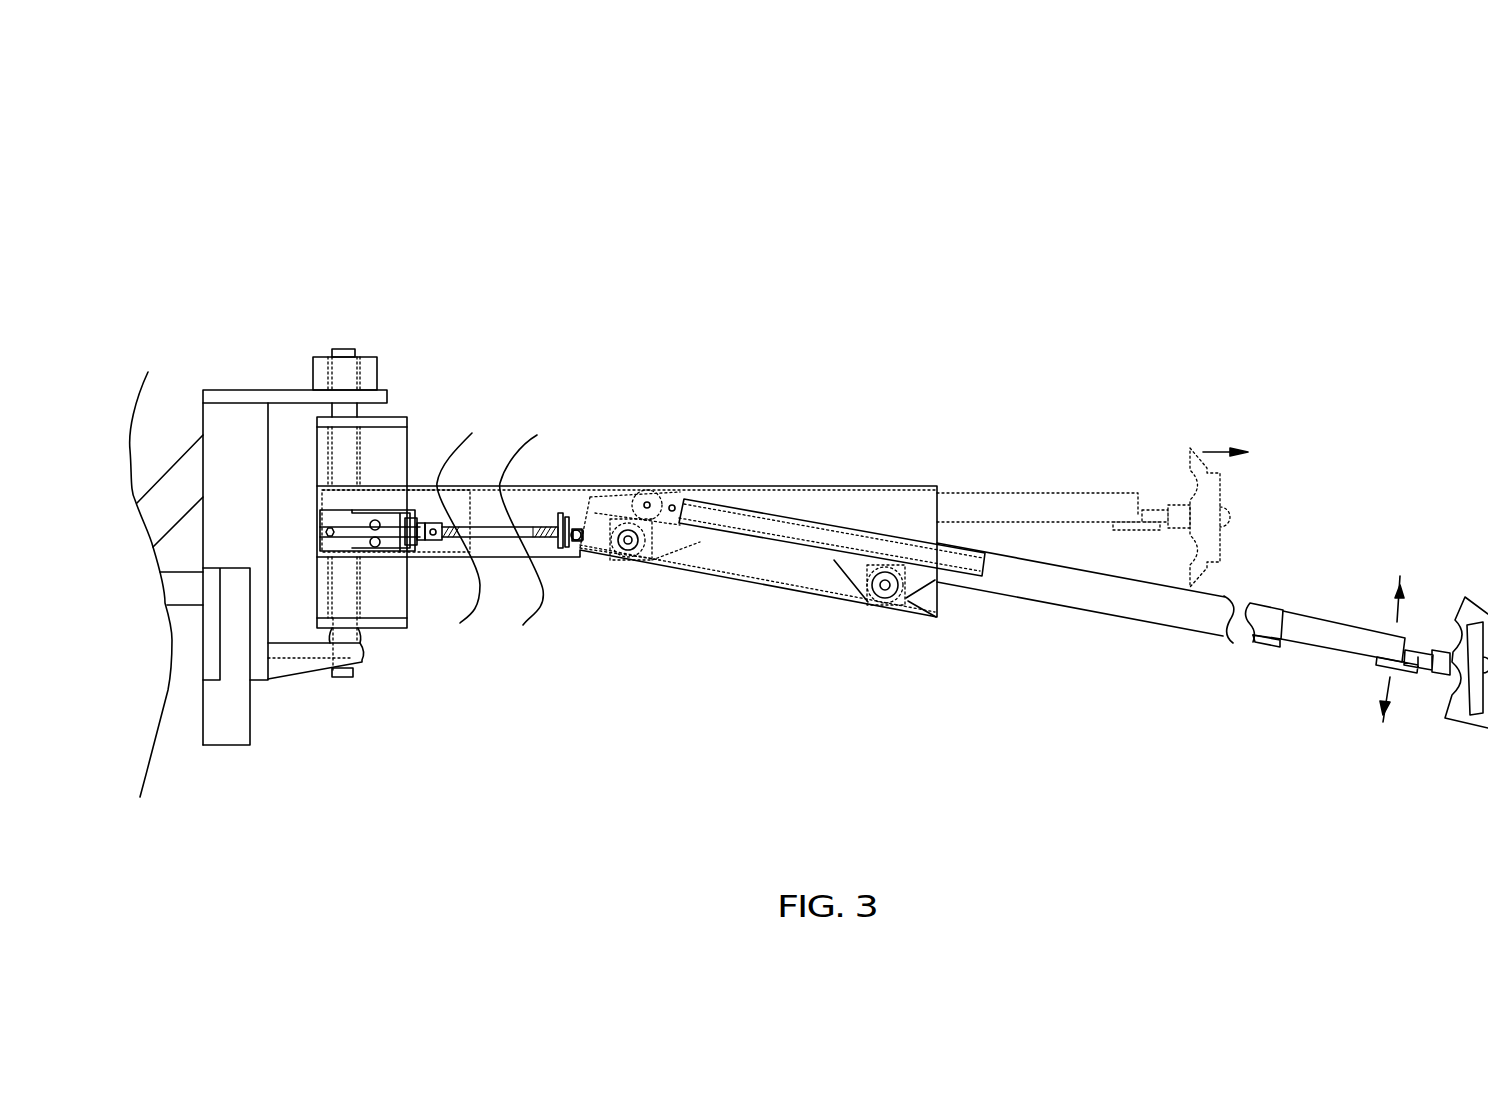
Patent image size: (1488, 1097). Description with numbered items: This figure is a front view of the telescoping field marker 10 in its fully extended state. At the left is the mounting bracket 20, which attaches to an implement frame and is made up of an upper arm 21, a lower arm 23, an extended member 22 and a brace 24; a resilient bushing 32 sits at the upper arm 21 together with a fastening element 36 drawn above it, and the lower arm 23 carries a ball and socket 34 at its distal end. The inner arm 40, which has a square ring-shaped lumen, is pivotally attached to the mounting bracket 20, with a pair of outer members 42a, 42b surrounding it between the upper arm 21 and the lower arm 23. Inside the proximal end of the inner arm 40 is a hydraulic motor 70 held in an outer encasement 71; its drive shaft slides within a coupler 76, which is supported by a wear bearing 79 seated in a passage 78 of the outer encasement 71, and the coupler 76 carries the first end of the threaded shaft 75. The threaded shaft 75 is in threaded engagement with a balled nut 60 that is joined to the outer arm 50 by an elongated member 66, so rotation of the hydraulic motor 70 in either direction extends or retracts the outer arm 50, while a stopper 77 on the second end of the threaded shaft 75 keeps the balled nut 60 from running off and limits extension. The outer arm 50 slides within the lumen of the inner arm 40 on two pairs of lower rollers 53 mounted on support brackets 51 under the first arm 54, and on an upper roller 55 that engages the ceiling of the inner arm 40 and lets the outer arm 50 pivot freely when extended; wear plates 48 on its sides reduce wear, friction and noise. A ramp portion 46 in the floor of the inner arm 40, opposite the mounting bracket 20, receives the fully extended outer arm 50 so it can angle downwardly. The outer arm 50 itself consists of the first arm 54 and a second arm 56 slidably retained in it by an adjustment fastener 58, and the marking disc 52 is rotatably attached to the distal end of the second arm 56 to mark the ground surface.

The telescoping field marker 10 is at (895, 195).
The mounting bracket 20 is at (230, 427).
The upper arm 21 is at (388, 390).
The extended member 22 is at (187, 607).
The lower arm 23 is at (278, 680).
The brace 24 is at (177, 467).
The resilient bushing 32 is at (372, 357).
The ball and socket 34 is at (364, 660).
The nut 36 is at (343, 349).
The inner arm 40 is at (798, 485).
The outer member 42a is at (407, 440).
The outer member 42b is at (360, 632).
The ramp portion 46 is at (787, 590).
The wear plates 48 is at (985, 572).
The outer arm 50 is at (1281, 590).
The support brackets 51 is at (660, 550).
The marking disc 52 is at (1465, 597).
The lower rollers 53 is at (593, 548).
The first arm 54 is at (853, 525).
The upper roller 55 is at (655, 492).
The second arm 56 is at (1358, 636).
The adjustment fastener 58 is at (1260, 643).
The balled nut 60 is at (562, 486).
The elongated member 66 is at (610, 557).
The hydraulic motor 70 is at (342, 517).
The outer encasement 71 is at (400, 508).
The threaded shaft 75 is at (547, 483).
The coupler 76 is at (436, 543).
The stopper 77 is at (585, 500).
The passage 78 is at (427, 543).
The wear bearing 79 is at (422, 543).